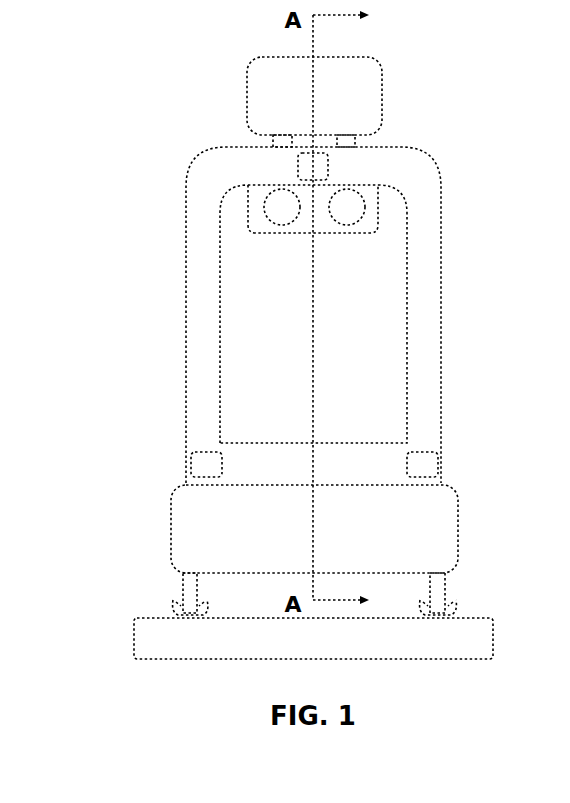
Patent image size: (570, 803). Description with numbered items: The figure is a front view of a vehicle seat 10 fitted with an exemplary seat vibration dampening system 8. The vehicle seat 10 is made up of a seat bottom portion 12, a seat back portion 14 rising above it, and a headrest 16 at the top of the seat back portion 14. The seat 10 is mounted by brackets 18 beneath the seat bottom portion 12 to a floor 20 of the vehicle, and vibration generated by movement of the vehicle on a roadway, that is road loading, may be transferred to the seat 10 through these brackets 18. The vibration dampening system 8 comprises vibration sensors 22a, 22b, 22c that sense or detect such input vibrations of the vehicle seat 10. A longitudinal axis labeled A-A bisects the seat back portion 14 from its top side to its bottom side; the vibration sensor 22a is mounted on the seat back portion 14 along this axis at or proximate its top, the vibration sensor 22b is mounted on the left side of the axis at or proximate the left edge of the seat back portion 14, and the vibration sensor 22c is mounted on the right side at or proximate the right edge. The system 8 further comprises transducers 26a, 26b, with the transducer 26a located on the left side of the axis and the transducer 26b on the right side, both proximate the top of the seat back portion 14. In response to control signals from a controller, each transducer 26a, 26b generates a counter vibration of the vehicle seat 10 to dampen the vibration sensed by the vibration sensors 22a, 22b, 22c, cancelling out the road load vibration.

The vibration dampening system 8 is at (122, 125).
The vehicle seat 10 is at (492, 354).
The seat bottom portion 12 is at (458, 527).
The seat back portion 14 is at (441, 177).
The headrest 16 is at (382, 95).
The brackets 18 is at (183, 590).
The floor 20 is at (134, 638).
The vibration sensor 22a is at (298, 166).
The vibration sensor 22b is at (191, 465).
The vibration sensor 22c is at (441, 462).
The transducer 26a is at (264, 207).
The transducer 26b is at (365, 207).